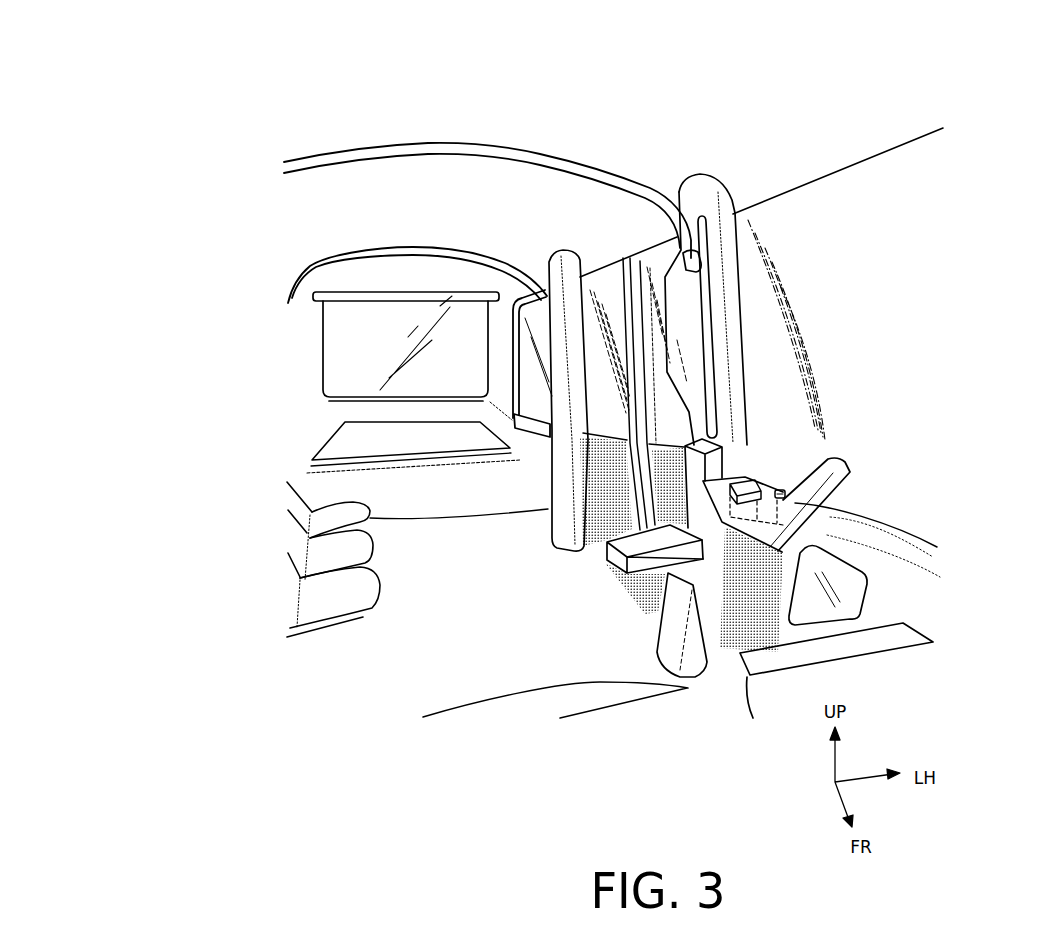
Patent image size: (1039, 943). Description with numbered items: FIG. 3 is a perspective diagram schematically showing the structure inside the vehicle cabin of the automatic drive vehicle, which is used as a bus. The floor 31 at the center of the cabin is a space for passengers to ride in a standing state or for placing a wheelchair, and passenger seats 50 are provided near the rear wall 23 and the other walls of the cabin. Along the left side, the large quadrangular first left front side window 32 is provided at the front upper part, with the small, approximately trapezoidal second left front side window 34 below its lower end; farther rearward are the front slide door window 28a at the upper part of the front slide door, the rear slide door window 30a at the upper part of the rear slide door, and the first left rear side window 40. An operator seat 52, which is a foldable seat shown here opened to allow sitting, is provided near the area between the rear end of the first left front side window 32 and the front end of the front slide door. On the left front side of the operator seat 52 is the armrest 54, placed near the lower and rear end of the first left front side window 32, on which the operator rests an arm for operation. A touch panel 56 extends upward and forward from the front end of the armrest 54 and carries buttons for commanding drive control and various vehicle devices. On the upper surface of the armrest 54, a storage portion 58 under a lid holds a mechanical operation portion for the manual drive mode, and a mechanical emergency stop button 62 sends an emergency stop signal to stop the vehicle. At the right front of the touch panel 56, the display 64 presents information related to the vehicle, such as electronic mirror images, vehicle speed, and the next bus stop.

The rear wall 23 is at (353, 324).
The first left rear side window 40 is at (537, 307).
The rear slide door window 30a is at (603, 263).
The front slide door window 28a is at (653, 250).
The first left front side window 32 is at (833, 182).
The storage portion 58 is at (770, 482).
The emergency stop button 62 is at (785, 490).
The touch panel 56 is at (818, 464).
The second left front side window 34 is at (857, 578).
The display 64 is at (860, 623).
The passenger seats 50 is at (323, 407).
The floor 31 is at (555, 654).
The operator seat 52 is at (607, 558).
The armrest 54 is at (726, 510).